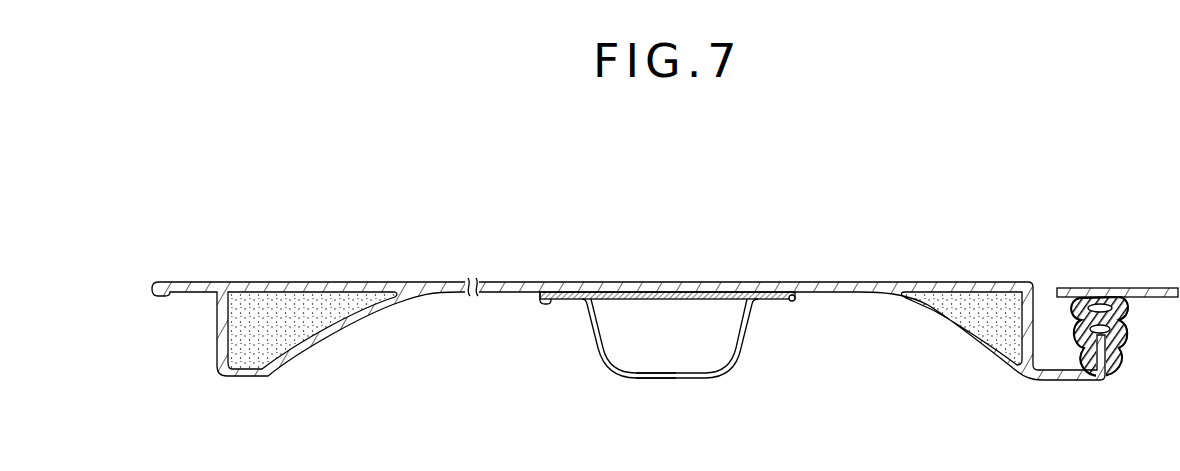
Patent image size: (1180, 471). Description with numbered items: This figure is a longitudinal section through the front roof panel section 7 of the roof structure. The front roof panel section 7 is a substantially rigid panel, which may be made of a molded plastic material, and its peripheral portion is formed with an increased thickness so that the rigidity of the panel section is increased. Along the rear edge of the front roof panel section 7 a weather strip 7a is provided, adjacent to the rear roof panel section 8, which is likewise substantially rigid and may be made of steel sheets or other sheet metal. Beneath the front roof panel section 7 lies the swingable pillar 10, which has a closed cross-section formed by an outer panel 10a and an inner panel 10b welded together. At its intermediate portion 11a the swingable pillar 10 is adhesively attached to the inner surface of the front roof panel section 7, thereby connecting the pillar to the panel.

The front roof panel section 7 is at (512, 283).
The weather strip 7a is at (1124, 346).
The rear roof panel section 8 is at (1128, 289).
The swingable pillar 10 is at (678, 364).
The outer panel 10a is at (705, 299).
The inner panel 10b is at (686, 378).
The intermediate portion 11a is at (596, 354).